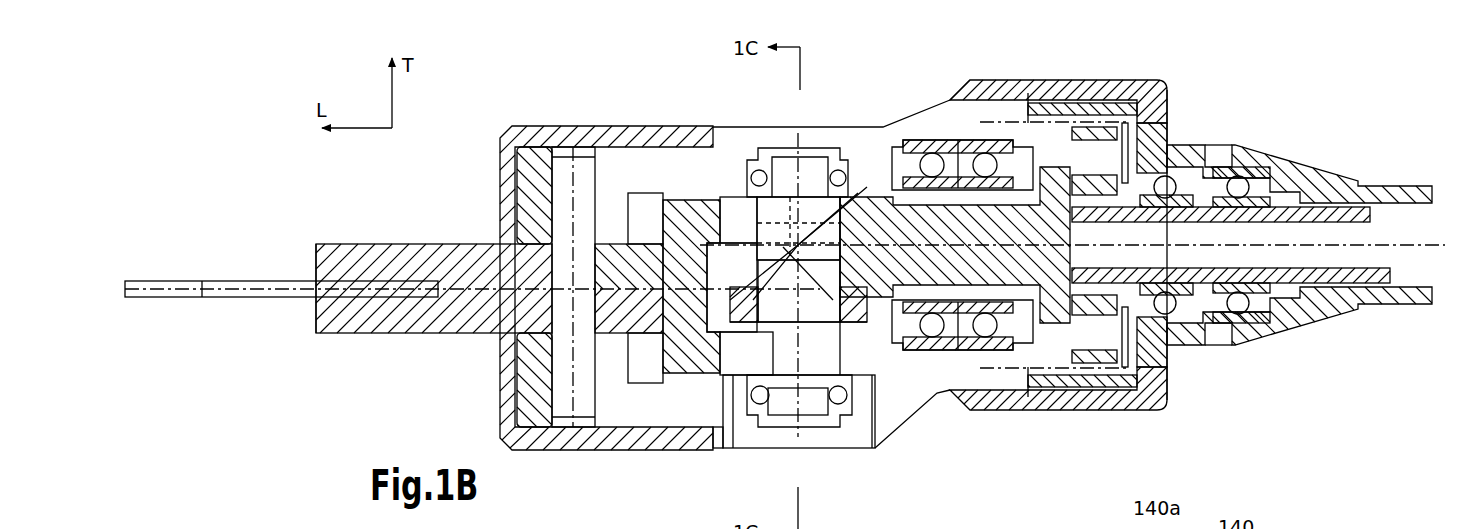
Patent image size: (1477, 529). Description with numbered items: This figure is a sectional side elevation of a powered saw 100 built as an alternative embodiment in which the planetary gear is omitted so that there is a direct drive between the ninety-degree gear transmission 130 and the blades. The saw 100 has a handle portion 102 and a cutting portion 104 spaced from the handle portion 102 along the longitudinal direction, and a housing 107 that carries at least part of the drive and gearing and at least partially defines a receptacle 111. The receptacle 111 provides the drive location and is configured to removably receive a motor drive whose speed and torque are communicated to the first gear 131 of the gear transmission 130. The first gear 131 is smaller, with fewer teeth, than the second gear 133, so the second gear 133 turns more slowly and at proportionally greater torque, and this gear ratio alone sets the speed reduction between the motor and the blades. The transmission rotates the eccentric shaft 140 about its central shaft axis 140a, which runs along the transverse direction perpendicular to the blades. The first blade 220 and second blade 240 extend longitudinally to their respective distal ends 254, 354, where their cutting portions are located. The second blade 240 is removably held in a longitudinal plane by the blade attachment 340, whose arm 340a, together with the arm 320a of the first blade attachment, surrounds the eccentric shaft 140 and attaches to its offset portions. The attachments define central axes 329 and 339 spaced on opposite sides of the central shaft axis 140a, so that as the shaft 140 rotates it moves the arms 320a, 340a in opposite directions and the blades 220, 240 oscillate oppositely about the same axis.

The powered saw 100 is at (1072, 264).
The handle portion 102 is at (1020, 68).
The cutting portion 104 is at (281, 269).
The housing 107 is at (1120, 82).
The receptacle 111 is at (1362, 236).
The 90° gear transmission 130 is at (828, 282).
The first gear 131 is at (838, 186).
The second gear 133 is at (730, 300).
The eccentric shaft 140 is at (795, 211).
The central shaft axis 140a is at (810, 170).
The first blade 220 is at (178, 298).
The second blade 240 is at (190, 281).
The distal end of first blade 254 is at (257, 332).
The distal end of second blade 354 is at (309, 305).
The first arm of first blade attachment 320a is at (784, 441).
The central axis of first blade attachment 329 is at (807, 387).
The central axis of second blade attachment 339 is at (795, 240).
The second blade attachment 340 is at (375, 332).
The first arm of second blade attachment 340a is at (733, 197).